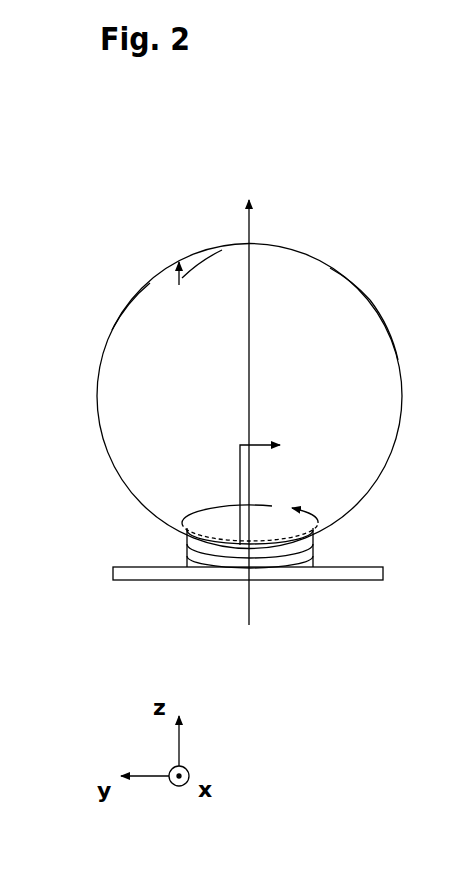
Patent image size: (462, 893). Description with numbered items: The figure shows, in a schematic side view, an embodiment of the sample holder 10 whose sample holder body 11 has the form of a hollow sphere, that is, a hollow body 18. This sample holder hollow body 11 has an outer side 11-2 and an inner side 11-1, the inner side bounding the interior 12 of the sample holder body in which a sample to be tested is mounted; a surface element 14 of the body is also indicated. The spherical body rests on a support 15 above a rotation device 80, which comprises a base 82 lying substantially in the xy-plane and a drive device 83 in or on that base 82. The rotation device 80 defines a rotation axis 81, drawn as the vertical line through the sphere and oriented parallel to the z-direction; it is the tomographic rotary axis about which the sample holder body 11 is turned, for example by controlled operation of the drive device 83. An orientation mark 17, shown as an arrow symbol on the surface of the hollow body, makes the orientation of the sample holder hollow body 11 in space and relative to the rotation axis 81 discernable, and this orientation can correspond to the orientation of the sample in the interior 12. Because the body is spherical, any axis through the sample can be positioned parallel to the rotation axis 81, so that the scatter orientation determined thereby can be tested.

The sample holder 10 is at (262, 327).
The hollow body 18 is at (262, 362).
The sample holder hollow body 11 is at (245, 362).
The inner side 11-1 is at (189, 262).
The outer side 11-2 is at (133, 298).
The interior of sample holder body 12 is at (302, 320).
The surface element 14 is at (340, 334).
The support 15 is at (310, 557).
The orientation mark 17 is at (240, 473).
The rotation device 80 is at (259, 589).
The rotation axis 81 is at (250, 597).
The base 82 is at (255, 619).
The drive device 83 is at (365, 572).